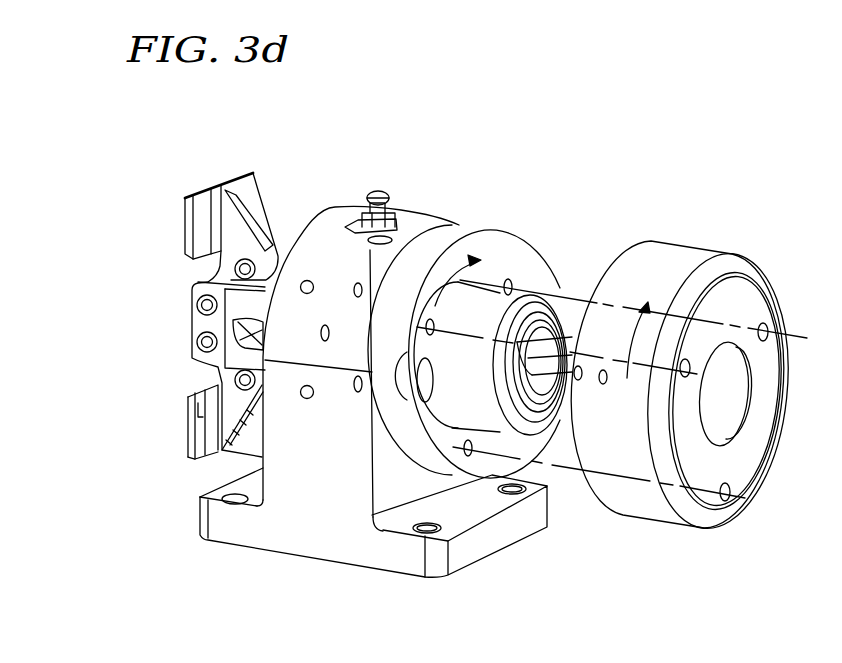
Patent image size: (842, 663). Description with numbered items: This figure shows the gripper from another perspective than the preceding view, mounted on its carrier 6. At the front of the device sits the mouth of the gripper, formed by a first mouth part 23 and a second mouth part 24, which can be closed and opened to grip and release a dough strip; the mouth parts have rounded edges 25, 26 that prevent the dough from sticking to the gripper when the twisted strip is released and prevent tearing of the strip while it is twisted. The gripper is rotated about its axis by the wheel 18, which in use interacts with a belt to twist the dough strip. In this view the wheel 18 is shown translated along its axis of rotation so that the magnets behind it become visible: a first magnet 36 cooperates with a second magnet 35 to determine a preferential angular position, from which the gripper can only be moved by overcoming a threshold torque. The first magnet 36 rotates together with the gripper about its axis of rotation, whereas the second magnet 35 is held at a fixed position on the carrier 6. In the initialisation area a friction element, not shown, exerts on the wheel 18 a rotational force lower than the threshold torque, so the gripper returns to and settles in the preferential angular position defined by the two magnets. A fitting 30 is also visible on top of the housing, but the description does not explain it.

The carrier 6 is at (277, 538).
The wheel 18 is at (670, 253).
The first mouth part 23 is at (238, 240).
The second mouth part 24 is at (199, 410).
The rounded edge 25 is at (186, 198).
The rounded edge 26 is at (186, 458).
The grease fitting 30 is at (388, 198).
The second magnet 35 is at (389, 380).
The first magnet 36 is at (420, 383).